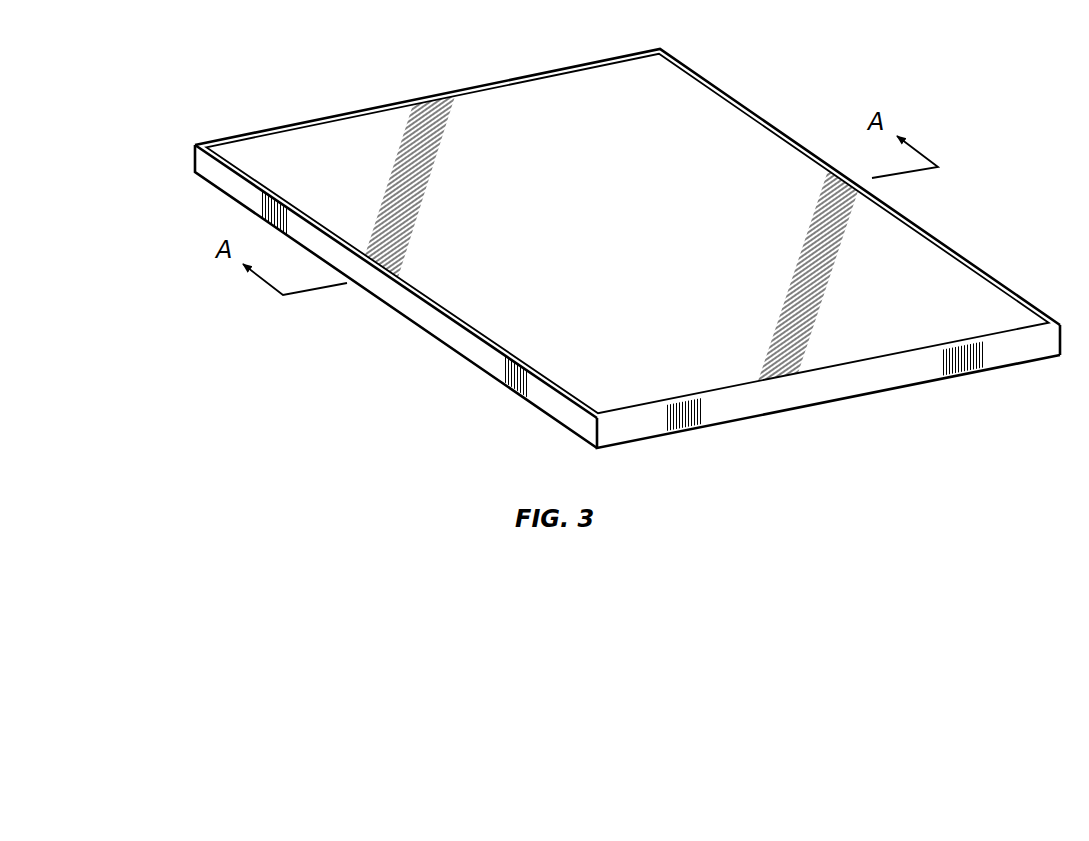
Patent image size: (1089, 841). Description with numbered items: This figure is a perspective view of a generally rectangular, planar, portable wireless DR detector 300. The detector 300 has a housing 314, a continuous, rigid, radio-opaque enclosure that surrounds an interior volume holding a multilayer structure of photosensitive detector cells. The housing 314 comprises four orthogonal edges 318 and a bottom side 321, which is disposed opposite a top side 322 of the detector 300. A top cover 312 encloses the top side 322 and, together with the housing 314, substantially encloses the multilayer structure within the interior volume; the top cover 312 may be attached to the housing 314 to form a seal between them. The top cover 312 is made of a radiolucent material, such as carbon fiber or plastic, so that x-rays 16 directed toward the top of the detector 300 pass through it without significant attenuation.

The portable wireless DR detector 300 is at (148, 98).
The x-rays 16 is at (561, 166).
The top cover 312 is at (543, 305).
The housing 314 is at (773, 396).
The orthogonal edges 318 is at (396, 103).
The bottom side 321 is at (654, 450).
The top side 322 is at (988, 315).